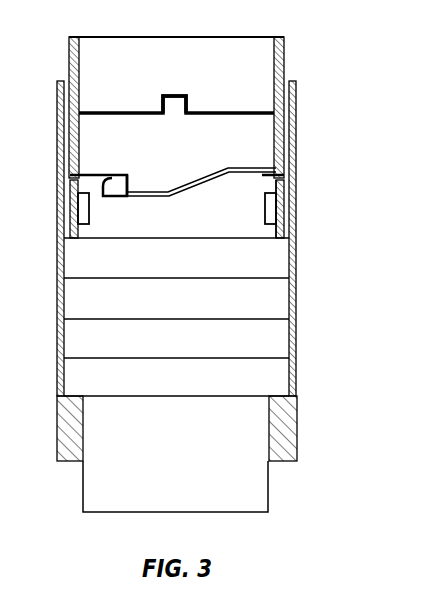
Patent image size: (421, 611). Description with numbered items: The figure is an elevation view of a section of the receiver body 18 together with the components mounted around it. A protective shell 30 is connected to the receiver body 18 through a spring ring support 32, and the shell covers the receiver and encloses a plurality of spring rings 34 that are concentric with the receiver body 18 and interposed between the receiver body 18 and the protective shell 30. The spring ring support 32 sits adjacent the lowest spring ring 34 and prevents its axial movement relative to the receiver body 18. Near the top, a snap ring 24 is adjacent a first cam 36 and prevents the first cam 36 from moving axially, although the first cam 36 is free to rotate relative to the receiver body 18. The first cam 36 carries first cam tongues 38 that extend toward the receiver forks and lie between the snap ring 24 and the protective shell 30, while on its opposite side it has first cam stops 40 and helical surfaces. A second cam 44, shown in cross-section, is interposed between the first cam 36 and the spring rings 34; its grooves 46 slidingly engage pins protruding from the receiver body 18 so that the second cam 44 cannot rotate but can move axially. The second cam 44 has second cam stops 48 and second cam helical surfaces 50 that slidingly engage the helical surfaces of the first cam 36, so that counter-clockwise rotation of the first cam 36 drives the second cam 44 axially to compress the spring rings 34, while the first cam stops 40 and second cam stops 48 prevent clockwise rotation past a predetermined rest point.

The receiver body 18 is at (83, 487).
The snap ring 24 is at (250, 110).
The protective shell 30 is at (295, 281).
The spring ring support 32 is at (70, 432).
The spring ring 34 is at (77, 254).
The first cam 36 is at (283, 135).
The first cam tongue 38 is at (162, 98).
The first cam stop 40 is at (100, 168).
The second cam 44 is at (285, 227).
The groove 46 is at (78, 204).
The second cam stop 48 is at (100, 175).
The second cam helical surface 50 is at (167, 192).